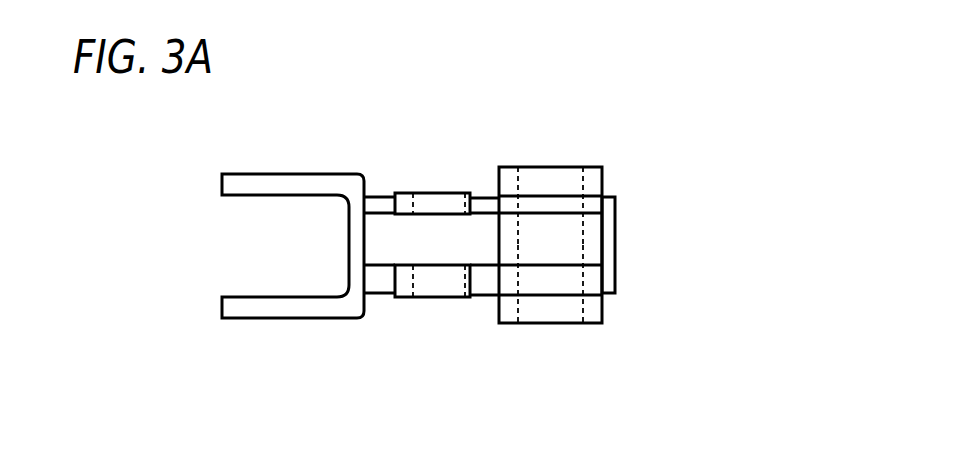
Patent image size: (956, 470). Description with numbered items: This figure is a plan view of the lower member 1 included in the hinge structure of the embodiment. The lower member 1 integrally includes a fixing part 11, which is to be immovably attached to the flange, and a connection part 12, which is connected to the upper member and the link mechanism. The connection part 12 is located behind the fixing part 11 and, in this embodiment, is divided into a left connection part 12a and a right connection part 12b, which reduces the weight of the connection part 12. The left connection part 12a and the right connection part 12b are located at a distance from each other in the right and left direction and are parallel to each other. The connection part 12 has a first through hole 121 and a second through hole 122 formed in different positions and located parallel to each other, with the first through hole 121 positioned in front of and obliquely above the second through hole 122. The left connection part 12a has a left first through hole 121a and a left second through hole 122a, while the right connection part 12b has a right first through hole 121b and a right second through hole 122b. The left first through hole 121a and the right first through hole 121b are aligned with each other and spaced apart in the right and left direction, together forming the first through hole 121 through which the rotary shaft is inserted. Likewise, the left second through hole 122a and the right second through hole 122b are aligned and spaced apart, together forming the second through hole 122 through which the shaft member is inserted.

The lower member 1 is at (297, 182).
The fixing part 11 is at (288, 310).
The connection part 12 is at (573, 391).
The left connection part 12a is at (482, 282).
The right connection part 12b is at (498, 205).
The first through hole 121 is at (488, 106).
The left first through hole 121a is at (423, 280).
The right first through hole 121b is at (445, 204).
The second through hole 122 is at (738, 208).
The left second through hole 122a is at (572, 305).
The right second through hole 122b is at (567, 188).